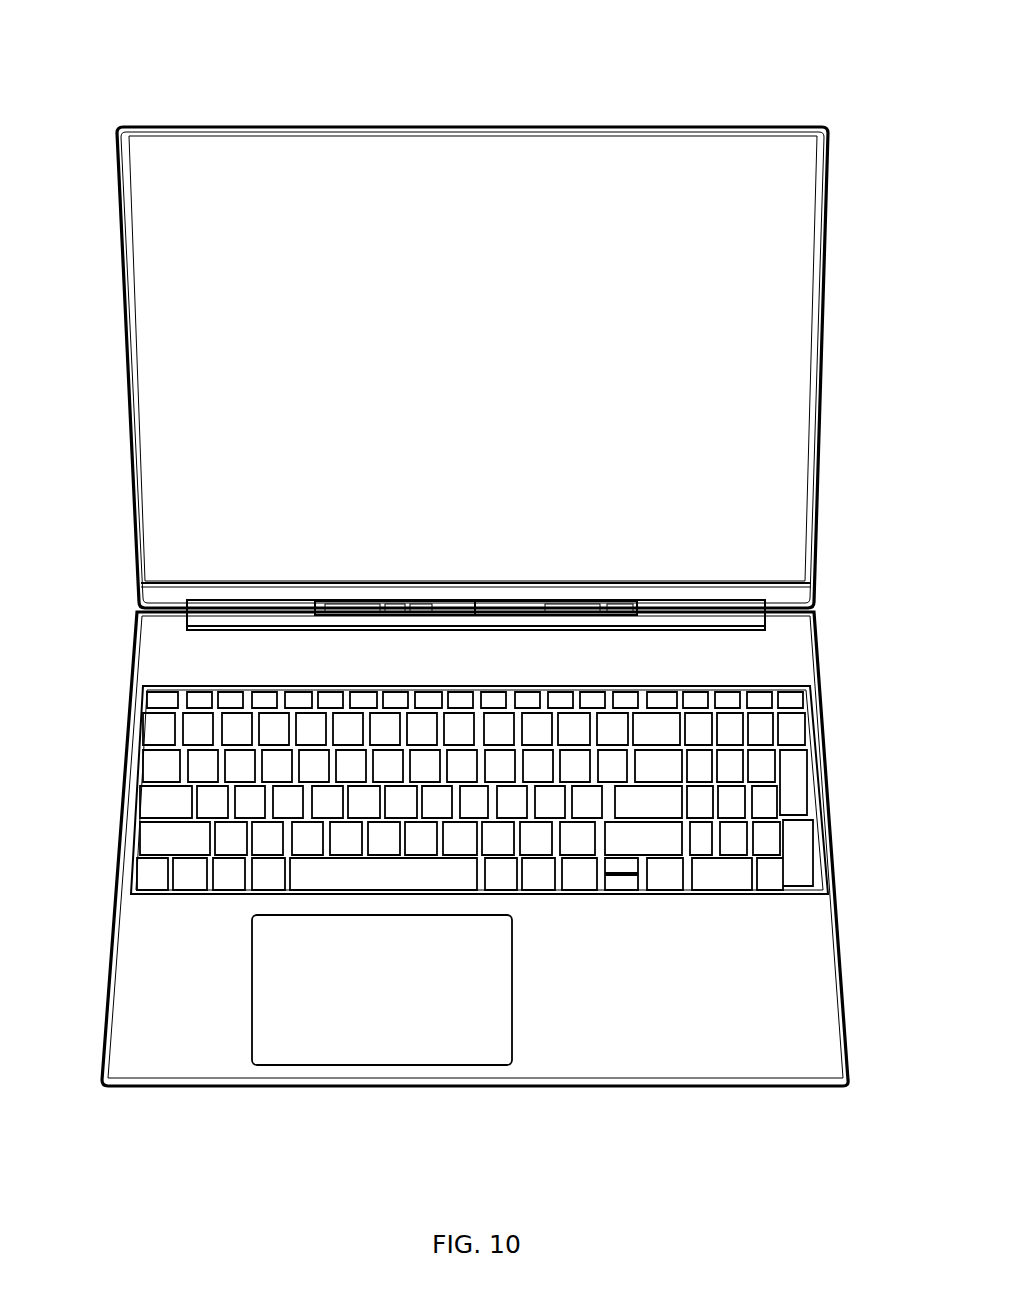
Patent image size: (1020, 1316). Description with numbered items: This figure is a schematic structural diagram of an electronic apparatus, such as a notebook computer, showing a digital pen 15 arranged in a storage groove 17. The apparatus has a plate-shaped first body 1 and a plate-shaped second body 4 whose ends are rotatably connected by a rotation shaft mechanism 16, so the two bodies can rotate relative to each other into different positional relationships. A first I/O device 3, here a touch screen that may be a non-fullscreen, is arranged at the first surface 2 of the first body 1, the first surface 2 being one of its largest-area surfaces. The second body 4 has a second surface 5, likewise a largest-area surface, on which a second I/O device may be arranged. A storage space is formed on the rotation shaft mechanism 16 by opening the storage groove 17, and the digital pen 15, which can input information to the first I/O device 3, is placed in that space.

The first body 1 is at (662, 124).
The first surface 2 is at (166, 597).
The first I/O device 3 is at (317, 208).
The second body 4 is at (573, 1087).
The second surface 5 is at (755, 655).
The digital pen 15 is at (322, 600).
The rotation shaft mechanism 16 is at (183, 622).
The storage groove 17 is at (645, 600).